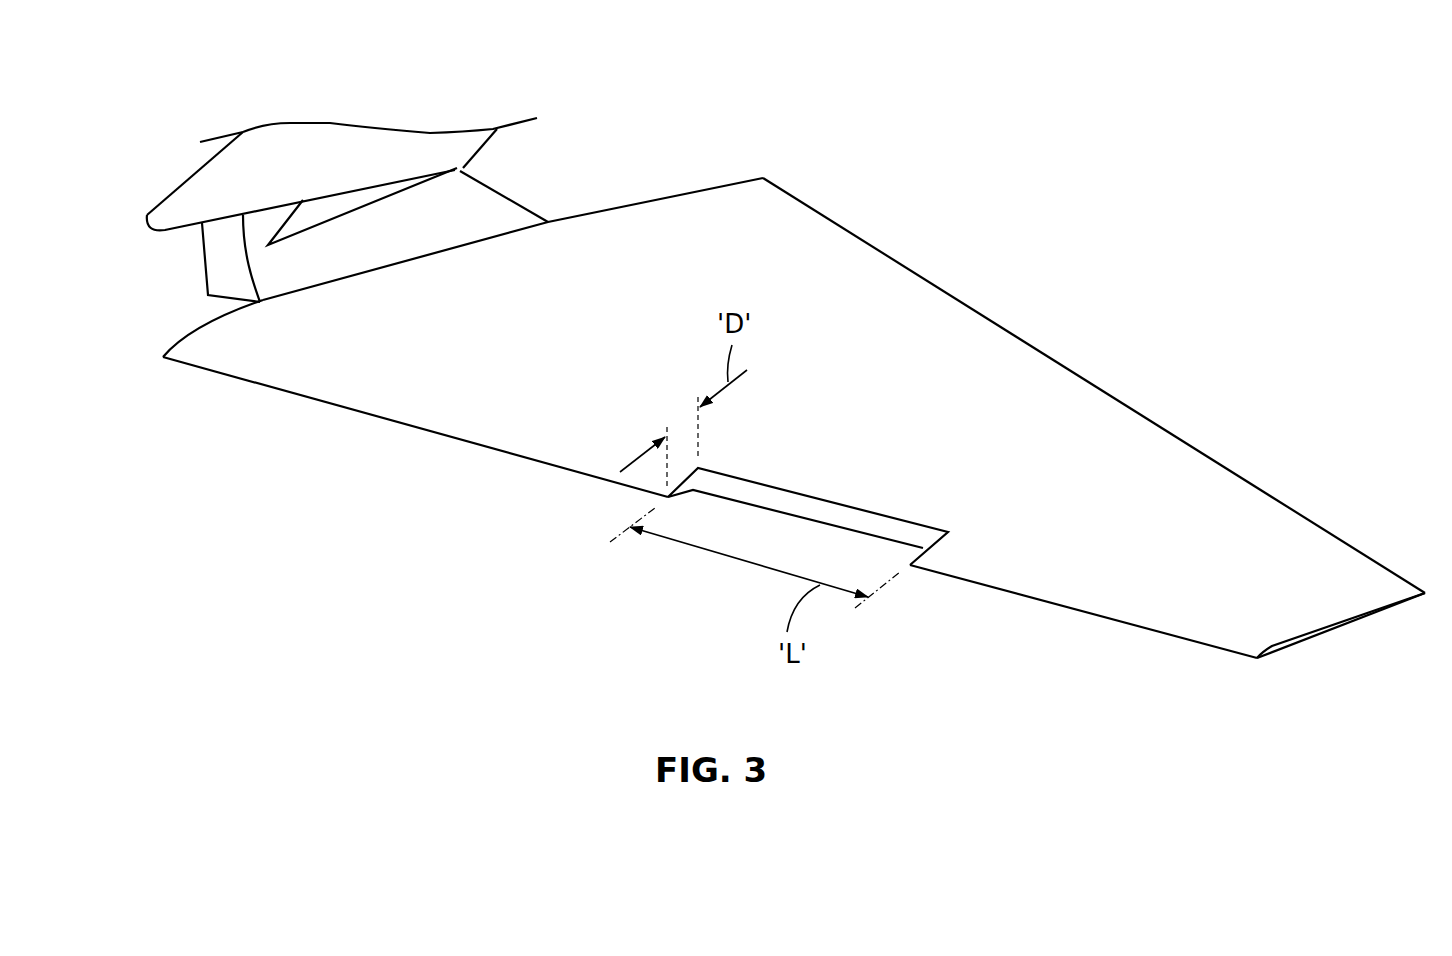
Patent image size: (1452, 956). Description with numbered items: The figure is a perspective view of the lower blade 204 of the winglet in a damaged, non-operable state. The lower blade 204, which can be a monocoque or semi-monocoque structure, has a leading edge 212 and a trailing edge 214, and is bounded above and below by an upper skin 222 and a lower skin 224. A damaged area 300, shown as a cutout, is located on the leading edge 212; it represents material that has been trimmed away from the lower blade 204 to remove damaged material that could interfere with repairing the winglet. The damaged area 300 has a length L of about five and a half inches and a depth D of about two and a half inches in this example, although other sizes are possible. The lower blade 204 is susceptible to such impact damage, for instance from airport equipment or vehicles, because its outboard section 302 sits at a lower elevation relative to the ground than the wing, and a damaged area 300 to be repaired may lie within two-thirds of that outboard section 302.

The lower blade 204 is at (1188, 130).
The leading edge 212 is at (1103, 618).
The trailing edge 214 is at (1207, 452).
The upper skin 222 is at (507, 420).
The lower skin 224 is at (1302, 648).
The damaged area 300 is at (868, 478).
The outboard section 302 is at (1232, 625).